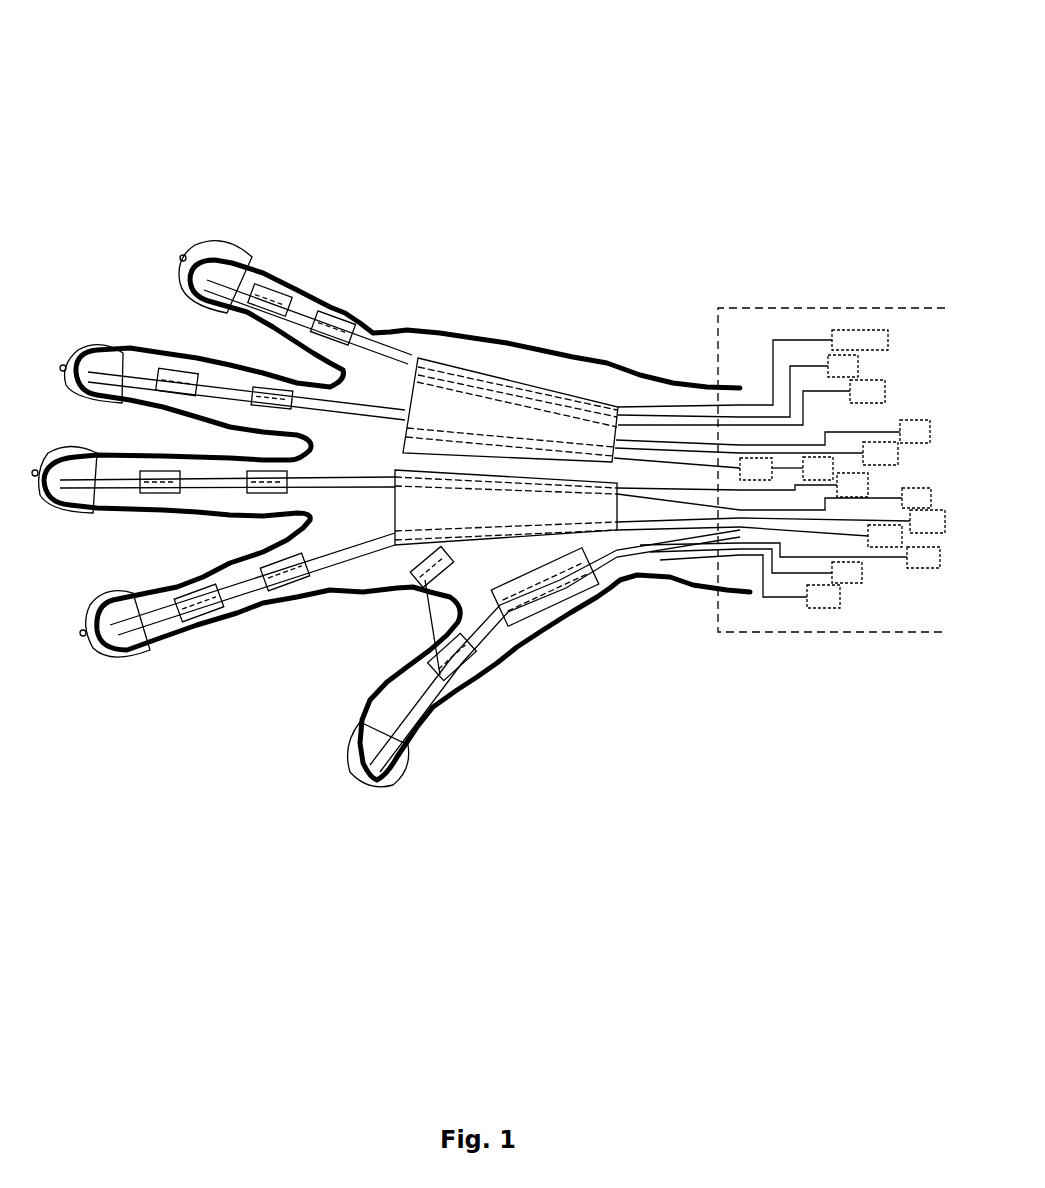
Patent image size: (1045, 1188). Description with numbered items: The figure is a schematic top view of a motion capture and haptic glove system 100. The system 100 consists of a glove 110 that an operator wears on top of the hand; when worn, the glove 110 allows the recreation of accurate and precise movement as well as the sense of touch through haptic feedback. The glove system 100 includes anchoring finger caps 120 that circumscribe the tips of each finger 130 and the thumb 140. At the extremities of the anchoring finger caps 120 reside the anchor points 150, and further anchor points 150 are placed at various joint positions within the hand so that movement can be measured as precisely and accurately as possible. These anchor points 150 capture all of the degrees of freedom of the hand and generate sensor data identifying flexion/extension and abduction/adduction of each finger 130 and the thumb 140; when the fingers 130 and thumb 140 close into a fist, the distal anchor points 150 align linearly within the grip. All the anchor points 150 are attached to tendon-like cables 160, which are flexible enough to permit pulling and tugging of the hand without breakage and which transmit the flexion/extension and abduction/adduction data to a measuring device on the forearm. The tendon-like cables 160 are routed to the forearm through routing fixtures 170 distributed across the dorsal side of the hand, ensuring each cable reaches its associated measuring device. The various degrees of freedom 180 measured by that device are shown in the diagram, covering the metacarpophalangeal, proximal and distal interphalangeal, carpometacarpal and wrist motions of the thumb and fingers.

The glove system 100 is at (645, 633).
The glove 110 is at (482, 335).
The anchoring finger caps 120 is at (214, 240).
The finger 130 is at (166, 652).
The thumb 140 is at (447, 704).
The anchor points 150 is at (237, 472).
The tendon-like cables 160 is at (623, 555).
The routing fixtures 170 is at (517, 378).
The degrees of freedom 180 is at (878, 620).